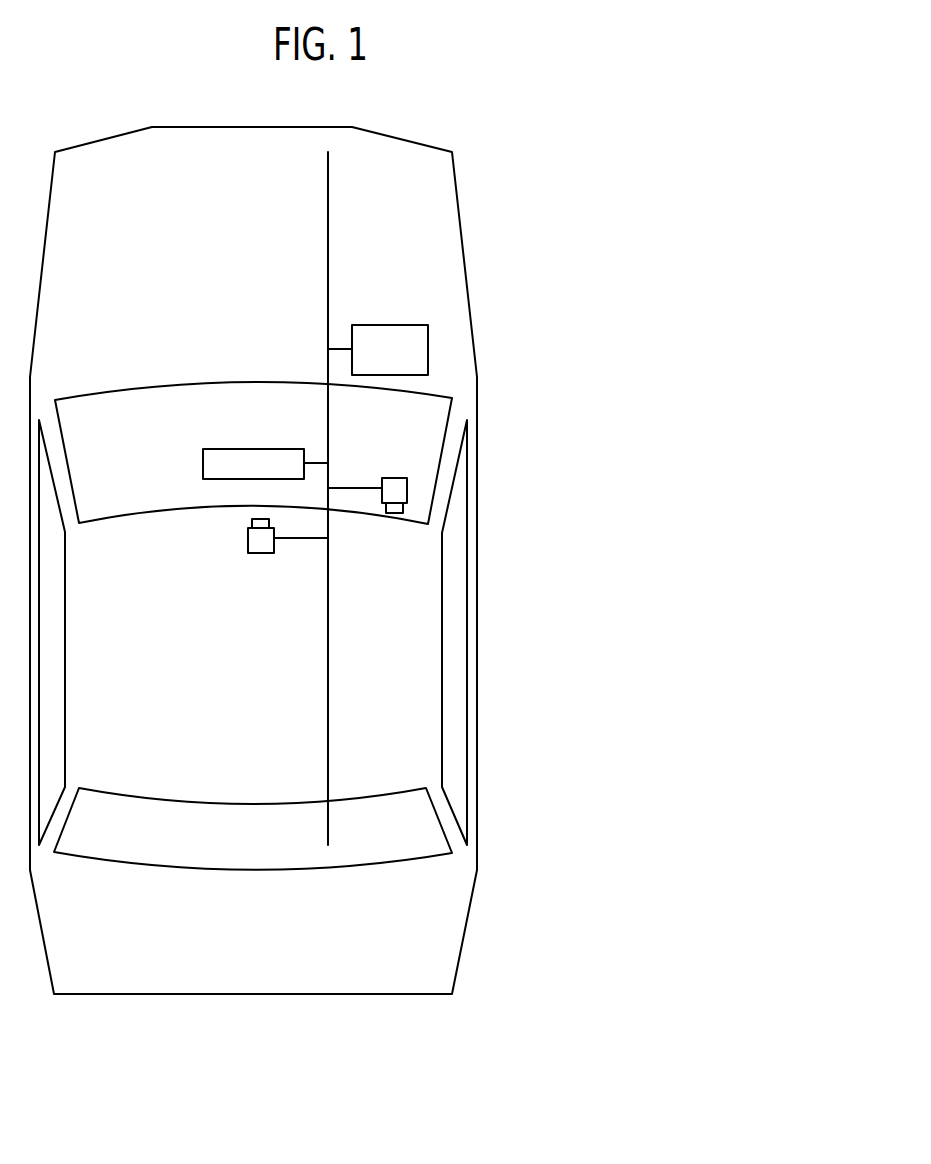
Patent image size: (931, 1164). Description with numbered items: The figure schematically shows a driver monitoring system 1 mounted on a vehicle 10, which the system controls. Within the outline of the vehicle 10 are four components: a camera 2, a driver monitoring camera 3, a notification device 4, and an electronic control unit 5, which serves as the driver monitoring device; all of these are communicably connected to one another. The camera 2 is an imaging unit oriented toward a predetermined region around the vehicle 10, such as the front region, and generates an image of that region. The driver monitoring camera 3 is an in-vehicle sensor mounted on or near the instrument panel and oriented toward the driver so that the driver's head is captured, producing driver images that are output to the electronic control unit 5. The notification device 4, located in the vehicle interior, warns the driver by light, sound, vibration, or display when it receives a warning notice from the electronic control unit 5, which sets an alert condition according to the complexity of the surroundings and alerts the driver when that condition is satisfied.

The driver monitoring system 1 is at (724, 895).
The vehicle 10 is at (477, 830).
The camera 2 is at (248, 540).
The driver monitoring camera 3 is at (407, 493).
The notification device 4 is at (203, 462).
The electronic control unit (ECU) 5 is at (428, 349).